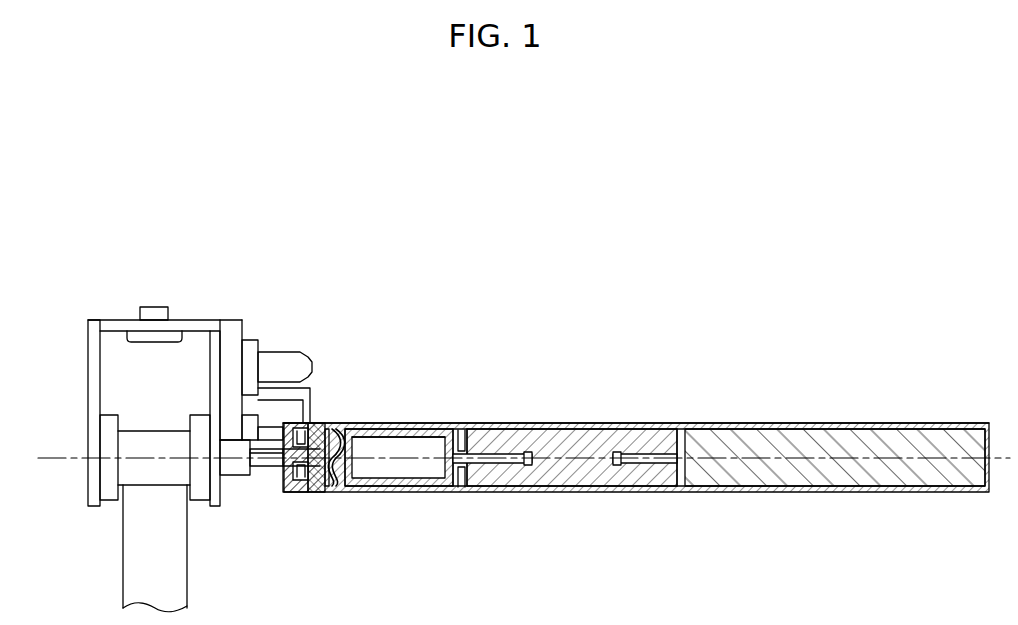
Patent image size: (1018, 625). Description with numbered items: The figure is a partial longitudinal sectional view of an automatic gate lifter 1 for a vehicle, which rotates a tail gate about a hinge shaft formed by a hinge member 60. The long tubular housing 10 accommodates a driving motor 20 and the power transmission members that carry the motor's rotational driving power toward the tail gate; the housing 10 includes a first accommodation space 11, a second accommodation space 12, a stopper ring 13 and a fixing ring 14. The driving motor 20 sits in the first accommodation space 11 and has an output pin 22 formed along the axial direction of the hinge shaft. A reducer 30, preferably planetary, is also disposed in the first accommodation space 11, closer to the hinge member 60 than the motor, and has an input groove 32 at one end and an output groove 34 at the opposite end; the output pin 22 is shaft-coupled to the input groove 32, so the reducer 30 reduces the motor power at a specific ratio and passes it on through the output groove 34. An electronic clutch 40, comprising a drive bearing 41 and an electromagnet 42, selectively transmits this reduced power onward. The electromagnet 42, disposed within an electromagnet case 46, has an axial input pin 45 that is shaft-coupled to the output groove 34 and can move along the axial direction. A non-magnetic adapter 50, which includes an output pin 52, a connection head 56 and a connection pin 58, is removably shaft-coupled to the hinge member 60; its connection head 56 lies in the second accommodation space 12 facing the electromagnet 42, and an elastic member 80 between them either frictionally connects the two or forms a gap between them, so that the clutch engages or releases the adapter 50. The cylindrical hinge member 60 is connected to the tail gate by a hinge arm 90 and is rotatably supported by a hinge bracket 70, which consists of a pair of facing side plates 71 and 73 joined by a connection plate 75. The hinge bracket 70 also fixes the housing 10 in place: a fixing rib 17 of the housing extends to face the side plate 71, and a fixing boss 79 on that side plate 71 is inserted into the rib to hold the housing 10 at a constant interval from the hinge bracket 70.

The automatic gate lifter 1 is at (44, 231).
The housing 10 is at (741, 383).
The first accommodation space 11 is at (816, 425).
The second accommodation space 12 is at (395, 425).
The stopper ring 13 is at (463, 430).
The fixing ring 14 is at (290, 494).
The fixing rib 17 is at (305, 394).
The driving motor 20 is at (860, 466).
The output pin 22 is at (647, 466).
The reducer 30 is at (570, 445).
The input groove 32 is at (620, 452).
The output groove 34 is at (522, 466).
The electronic clutch 40 is at (327, 550).
The drive bearing 41 is at (312, 494).
The electromagnet 42 is at (403, 468).
The input pin 45 is at (490, 466).
The electromagnet case 46 is at (433, 432).
The adapter 50 is at (267, 490).
The output pin 52 is at (234, 470).
The connection head 56 is at (330, 481).
The connection pin 58 is at (257, 467).
The hinge member 60 is at (156, 437).
The hinge bracket 70 is at (79, 351).
The side plate 71 is at (212, 362).
The side plate 73 is at (93, 372).
The connection plate 75 is at (116, 320).
The fixing boss 79 is at (283, 360).
The elastic member 80 is at (340, 432).
The hinge arm 90 is at (128, 553).